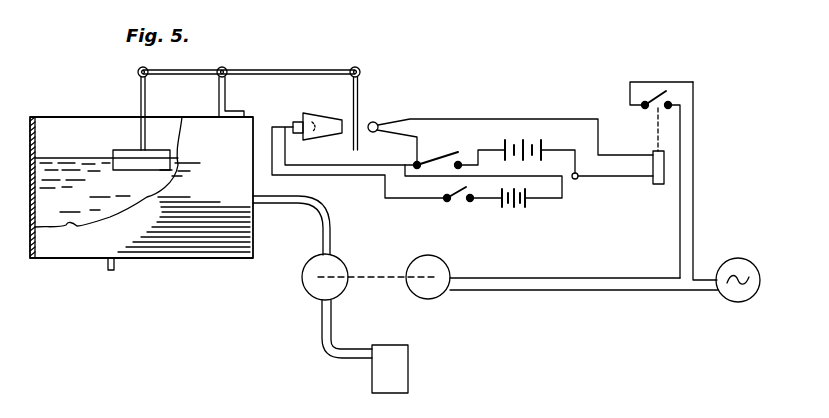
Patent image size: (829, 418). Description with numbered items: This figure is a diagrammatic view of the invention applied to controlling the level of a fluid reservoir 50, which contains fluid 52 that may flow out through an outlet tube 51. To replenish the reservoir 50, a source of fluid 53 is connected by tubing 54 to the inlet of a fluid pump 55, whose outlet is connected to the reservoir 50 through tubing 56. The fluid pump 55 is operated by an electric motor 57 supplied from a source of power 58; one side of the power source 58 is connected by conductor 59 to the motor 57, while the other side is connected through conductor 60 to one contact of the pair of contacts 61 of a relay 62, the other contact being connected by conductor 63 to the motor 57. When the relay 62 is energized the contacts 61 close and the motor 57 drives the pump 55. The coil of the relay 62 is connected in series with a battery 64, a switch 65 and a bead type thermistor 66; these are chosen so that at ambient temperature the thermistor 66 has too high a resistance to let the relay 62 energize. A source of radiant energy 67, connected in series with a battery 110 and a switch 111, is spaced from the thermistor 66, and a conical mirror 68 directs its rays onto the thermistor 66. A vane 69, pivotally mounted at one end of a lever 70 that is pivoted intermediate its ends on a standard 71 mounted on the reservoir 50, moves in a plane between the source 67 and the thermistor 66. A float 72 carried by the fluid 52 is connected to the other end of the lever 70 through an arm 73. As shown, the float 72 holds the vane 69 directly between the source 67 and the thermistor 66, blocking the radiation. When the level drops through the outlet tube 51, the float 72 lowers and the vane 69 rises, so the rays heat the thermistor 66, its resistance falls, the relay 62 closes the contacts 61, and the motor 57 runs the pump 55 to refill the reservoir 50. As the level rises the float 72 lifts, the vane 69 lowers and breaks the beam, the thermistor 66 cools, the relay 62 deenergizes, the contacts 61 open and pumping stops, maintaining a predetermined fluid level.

The fluid reservoir 50 is at (82, 117).
The outlet tube 51 is at (108, 270).
The fluid 52 is at (70, 158).
The source of fluid 53 is at (409, 375).
The tubing 54 is at (333, 340).
The fluid pump 55 is at (346, 262).
The tubing 56 is at (300, 204).
The electric motor 57 is at (445, 257).
The source of power 58 is at (732, 302).
The conductor 59 is at (574, 291).
The conductor 60 is at (698, 186).
The pair of contacts 61 is at (667, 90).
The relay 62 is at (657, 185).
The conductor 63 is at (615, 277).
The battery 64 is at (530, 138).
The switch 65 is at (460, 153).
The bead type thermistor 66 is at (378, 122).
The source of radiant energy 67 is at (296, 120).
The conical mirror 68 is at (330, 113).
The vane 69 is at (358, 100).
The lever 70 is at (265, 70).
The standard 71 is at (226, 92).
The float 72 is at (123, 150).
The arm 73 is at (141, 95).
The battery 110 is at (516, 206).
The switch 111 is at (471, 201).